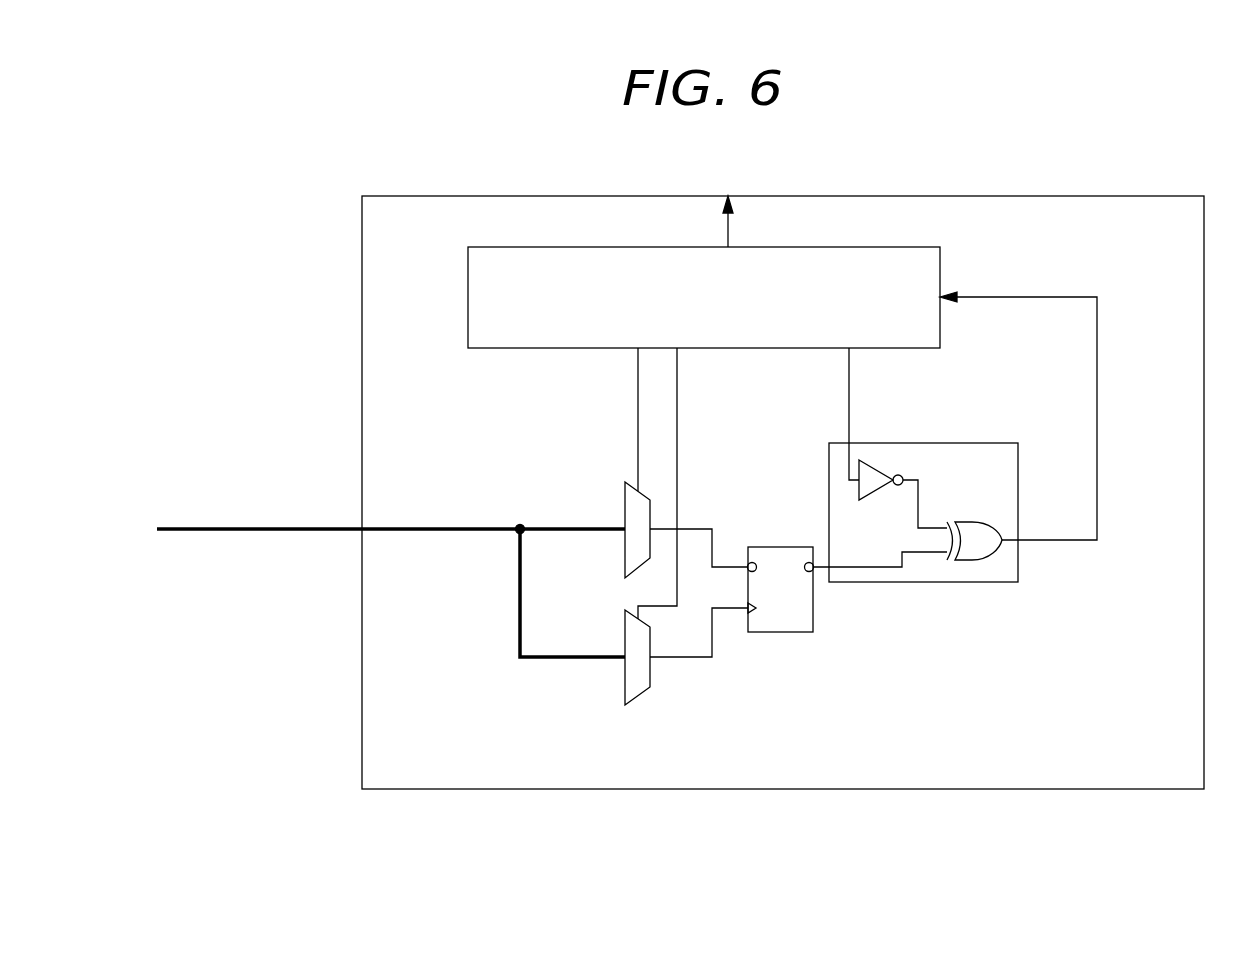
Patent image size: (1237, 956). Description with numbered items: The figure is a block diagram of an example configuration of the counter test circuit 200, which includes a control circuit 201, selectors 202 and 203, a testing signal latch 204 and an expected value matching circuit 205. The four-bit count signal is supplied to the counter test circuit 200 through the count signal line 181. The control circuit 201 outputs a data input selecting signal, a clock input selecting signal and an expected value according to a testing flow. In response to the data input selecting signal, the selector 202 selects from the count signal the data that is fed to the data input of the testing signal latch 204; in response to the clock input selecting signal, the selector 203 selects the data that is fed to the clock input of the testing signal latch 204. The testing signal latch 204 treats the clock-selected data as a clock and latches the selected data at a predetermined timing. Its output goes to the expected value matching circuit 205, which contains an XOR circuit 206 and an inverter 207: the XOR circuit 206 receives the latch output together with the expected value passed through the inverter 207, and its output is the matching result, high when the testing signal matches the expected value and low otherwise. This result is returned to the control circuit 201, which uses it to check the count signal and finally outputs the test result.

The count signal line 181 is at (220, 528).
The counter test circuit 200 is at (1050, 195).
The control circuit 201 is at (880, 247).
The selector 202 is at (620, 507).
The selector 203 is at (620, 678).
The testing signal latch 204 is at (813, 610).
The expected value matching circuit 205 is at (988, 583).
The XOR circuit 206 is at (972, 520).
The inverter 207 is at (873, 490).